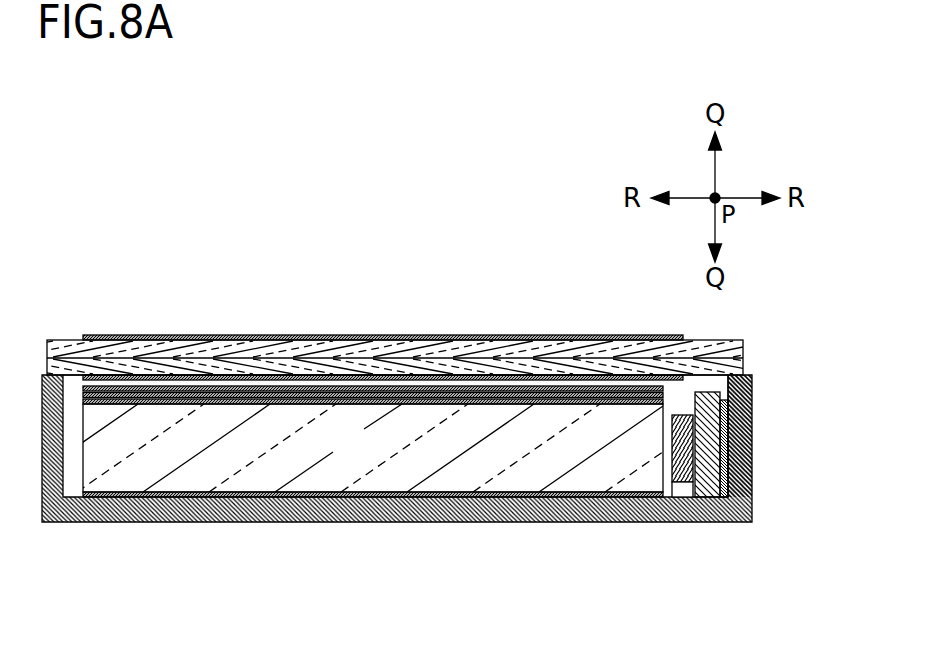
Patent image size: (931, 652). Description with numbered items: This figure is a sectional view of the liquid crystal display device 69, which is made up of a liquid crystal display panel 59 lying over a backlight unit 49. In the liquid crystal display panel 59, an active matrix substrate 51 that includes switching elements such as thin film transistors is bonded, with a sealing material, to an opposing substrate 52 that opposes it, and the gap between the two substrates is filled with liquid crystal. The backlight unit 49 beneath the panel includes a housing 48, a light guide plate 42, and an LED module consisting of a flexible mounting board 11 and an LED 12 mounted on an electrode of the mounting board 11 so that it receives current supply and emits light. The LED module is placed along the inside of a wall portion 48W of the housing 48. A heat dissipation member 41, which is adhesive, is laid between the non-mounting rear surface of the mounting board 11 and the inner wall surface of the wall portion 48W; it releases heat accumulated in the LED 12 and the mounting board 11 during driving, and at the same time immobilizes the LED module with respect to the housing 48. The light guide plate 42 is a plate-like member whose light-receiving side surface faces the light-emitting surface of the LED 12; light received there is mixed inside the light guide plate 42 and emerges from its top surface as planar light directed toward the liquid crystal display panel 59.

The liquid crystal display device 69 is at (112, 295).
The liquid crystal display panel 59 is at (813, 332).
The opposing substrate 52 is at (733, 352).
The active matrix substrate 51 is at (735, 374).
The backlight unit 49 is at (813, 383).
The housing 48 is at (752, 521).
The wall portion 48W is at (745, 423).
The light guide plate 42 is at (404, 448).
The LED 12 is at (683, 470).
The mounting board 11 is at (708, 490).
The heat dissipation member 41 is at (724, 488).